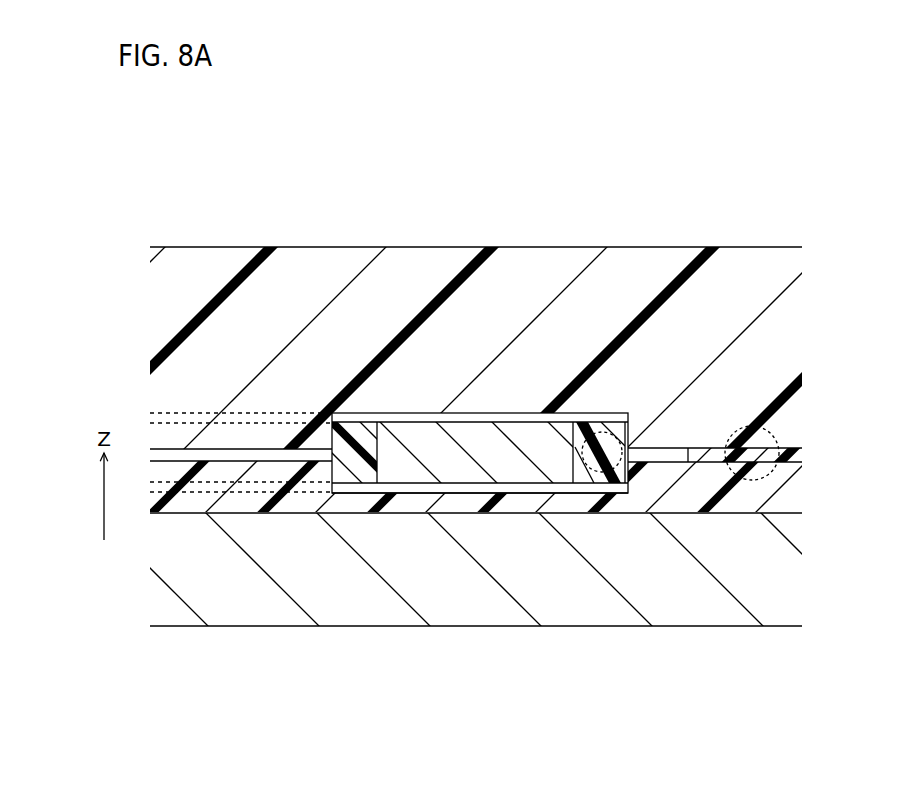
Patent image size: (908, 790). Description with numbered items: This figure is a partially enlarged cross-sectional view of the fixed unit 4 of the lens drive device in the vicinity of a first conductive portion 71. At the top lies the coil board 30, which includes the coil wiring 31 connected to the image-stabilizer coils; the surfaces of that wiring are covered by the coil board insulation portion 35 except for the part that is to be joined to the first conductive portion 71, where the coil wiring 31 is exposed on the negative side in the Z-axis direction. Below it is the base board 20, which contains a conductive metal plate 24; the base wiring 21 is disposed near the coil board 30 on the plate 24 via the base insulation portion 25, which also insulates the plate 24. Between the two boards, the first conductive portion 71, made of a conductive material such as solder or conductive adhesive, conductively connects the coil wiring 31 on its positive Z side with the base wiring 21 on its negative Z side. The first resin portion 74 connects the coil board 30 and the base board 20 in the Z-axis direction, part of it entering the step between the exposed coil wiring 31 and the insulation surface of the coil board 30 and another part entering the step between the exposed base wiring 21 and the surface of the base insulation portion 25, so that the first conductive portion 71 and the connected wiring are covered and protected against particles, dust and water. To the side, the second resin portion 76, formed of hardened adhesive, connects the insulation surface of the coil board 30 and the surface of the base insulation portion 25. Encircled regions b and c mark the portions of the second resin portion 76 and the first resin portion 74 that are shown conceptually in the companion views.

The fixed unit 4 is at (728, 145).
The base board 20 is at (242, 632).
The base wiring 21 is at (427, 490).
The plate 24 is at (462, 606).
The base insulation portion 25 is at (772, 500).
The coil board 30 is at (752, 243).
The coil wiring 31 is at (485, 416).
The coil board insulation portion 35 is at (300, 282).
The first conductive portion 71 is at (425, 437).
The first resin portion 74 is at (600, 437).
The second resin portion 76 is at (713, 447).
The enlarged portion b is at (776, 440).
The enlarged portion c is at (593, 471).